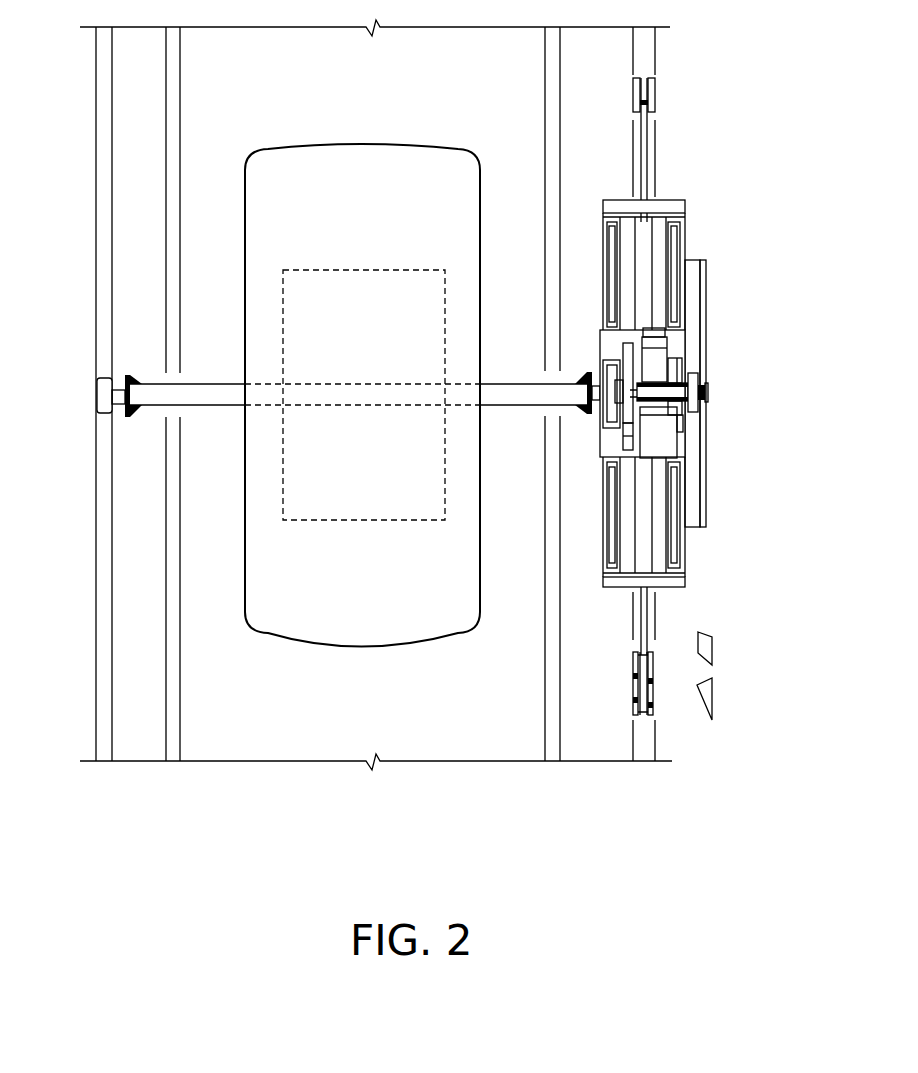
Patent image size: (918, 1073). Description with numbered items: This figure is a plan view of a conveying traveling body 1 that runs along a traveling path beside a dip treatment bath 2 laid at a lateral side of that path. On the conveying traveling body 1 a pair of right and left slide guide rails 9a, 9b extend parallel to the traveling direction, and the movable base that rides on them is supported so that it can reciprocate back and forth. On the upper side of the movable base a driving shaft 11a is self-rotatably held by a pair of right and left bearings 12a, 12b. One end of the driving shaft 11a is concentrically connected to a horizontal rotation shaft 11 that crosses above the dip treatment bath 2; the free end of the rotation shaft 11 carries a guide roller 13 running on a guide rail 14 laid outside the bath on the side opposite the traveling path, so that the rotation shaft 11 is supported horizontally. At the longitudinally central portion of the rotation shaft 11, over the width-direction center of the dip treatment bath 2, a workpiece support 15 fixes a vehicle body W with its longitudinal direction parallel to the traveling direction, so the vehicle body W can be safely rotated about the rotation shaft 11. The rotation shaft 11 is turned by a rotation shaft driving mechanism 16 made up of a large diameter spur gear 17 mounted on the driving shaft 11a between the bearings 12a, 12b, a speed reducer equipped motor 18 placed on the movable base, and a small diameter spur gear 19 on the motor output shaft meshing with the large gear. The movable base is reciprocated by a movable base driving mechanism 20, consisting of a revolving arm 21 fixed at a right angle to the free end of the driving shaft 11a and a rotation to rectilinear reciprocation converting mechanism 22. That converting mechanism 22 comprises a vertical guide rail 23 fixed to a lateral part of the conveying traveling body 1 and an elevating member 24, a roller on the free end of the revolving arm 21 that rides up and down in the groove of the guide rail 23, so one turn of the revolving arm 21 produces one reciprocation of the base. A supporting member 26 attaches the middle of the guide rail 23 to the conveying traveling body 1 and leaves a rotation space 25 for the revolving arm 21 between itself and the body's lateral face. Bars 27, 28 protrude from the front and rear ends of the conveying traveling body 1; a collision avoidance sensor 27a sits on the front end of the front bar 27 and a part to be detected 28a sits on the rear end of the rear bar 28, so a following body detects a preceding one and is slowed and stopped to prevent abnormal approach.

The conveying traveling body 1 is at (683, 197).
The dip treatment bath 2 is at (307, 715).
The slide guide rail 9a is at (610, 508).
The slide guide rail 9b is at (676, 246).
The rotation shaft 11 is at (207, 397).
The driving shaft 11a is at (548, 390).
The bearing 12a is at (606, 412).
The bearing 12b is at (678, 372).
The guide roller 13 is at (97, 398).
The guide rail 14 is at (103, 335).
The workpiece support 15 is at (340, 508).
The rotation shaft driving mechanism 16 is at (648, 316).
The large diameter spur gear 17 is at (627, 362).
The speed reducer equipped motor 18 is at (650, 340).
The small diameter spur gear 19 is at (628, 442).
The movable base driving mechanism 20 is at (693, 424).
The revolving arm 21 is at (690, 410).
The rotation to rectilinear reciprocation converting mechanism 22 is at (708, 386).
The guide rail 23 is at (707, 392).
The elevating member 24 is at (708, 397).
The rotation space 25 is at (693, 278).
The supporting member 26 is at (704, 293).
The front bar 27 is at (648, 623).
The collision avoidance sensor 27a is at (633, 677).
The rear bar 28 is at (645, 150).
The part to be detected 28a is at (636, 82).
The vehicle body W is at (353, 170).